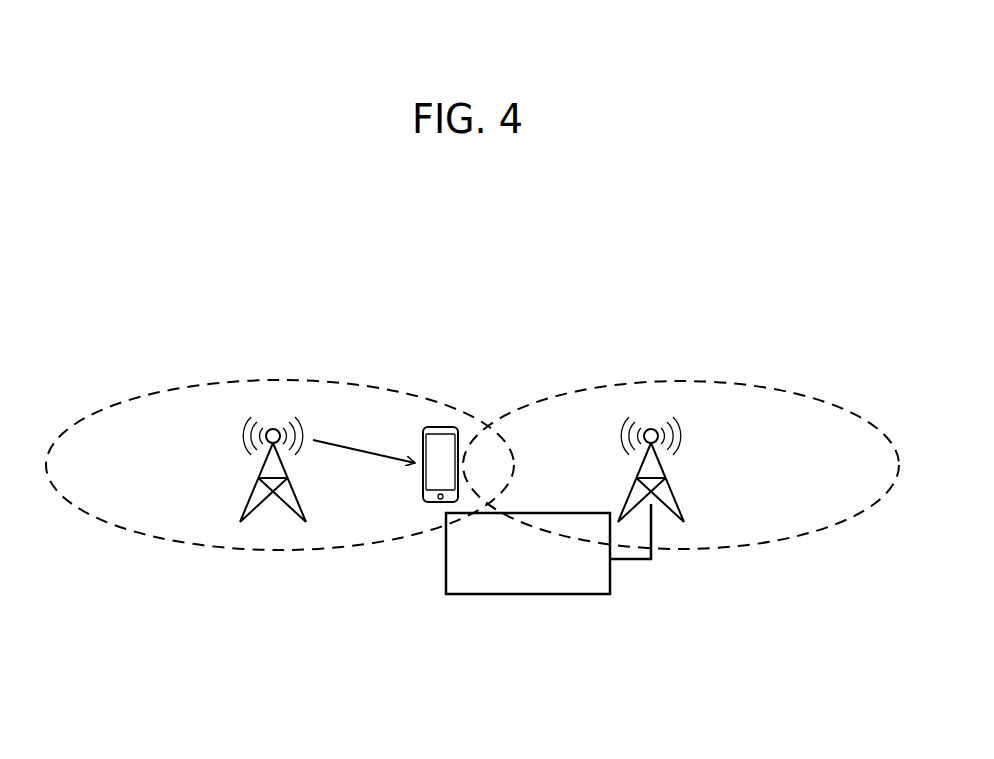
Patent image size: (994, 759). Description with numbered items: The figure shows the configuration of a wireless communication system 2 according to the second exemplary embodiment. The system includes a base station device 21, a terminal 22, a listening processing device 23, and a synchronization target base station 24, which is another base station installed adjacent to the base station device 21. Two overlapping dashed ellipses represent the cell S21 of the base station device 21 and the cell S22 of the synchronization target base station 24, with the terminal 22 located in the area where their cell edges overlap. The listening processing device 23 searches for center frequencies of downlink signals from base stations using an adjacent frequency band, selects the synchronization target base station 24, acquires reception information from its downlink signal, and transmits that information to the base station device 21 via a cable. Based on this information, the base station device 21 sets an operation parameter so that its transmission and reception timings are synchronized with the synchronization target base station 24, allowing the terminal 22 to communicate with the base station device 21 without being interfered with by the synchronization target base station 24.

The wireless communication system 2 is at (535, 300).
The base station device 21 is at (670, 488).
The terminal 22 is at (434, 427).
The listening processing device 23 is at (513, 595).
The synchronization target base station 24 is at (254, 485).
The cell S21 is at (688, 552).
The cell S22 is at (283, 551).